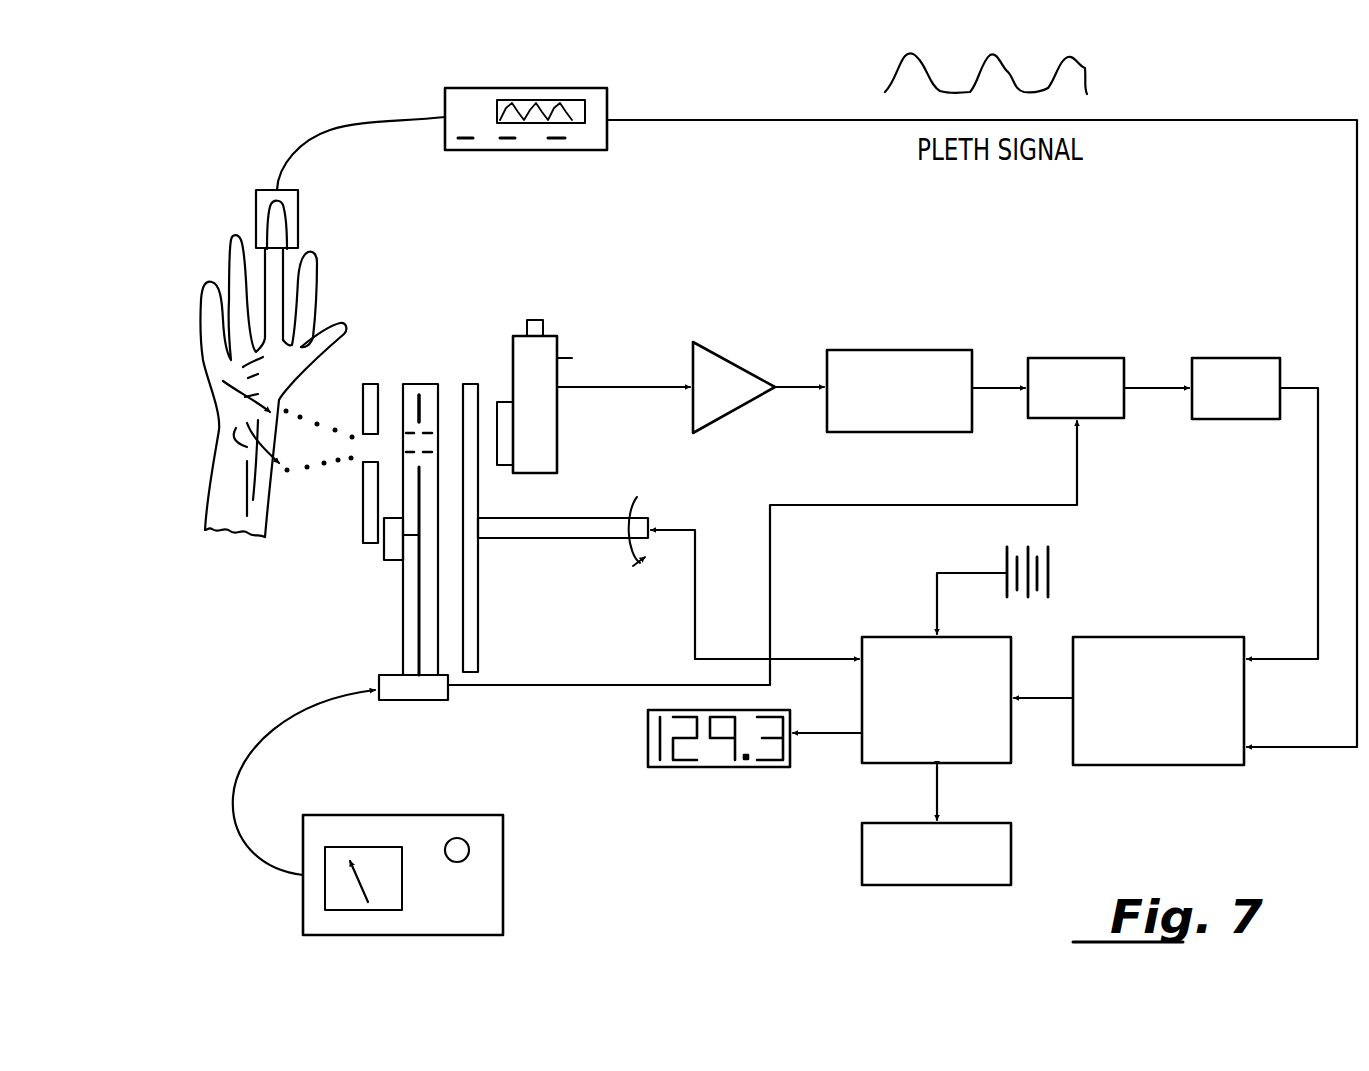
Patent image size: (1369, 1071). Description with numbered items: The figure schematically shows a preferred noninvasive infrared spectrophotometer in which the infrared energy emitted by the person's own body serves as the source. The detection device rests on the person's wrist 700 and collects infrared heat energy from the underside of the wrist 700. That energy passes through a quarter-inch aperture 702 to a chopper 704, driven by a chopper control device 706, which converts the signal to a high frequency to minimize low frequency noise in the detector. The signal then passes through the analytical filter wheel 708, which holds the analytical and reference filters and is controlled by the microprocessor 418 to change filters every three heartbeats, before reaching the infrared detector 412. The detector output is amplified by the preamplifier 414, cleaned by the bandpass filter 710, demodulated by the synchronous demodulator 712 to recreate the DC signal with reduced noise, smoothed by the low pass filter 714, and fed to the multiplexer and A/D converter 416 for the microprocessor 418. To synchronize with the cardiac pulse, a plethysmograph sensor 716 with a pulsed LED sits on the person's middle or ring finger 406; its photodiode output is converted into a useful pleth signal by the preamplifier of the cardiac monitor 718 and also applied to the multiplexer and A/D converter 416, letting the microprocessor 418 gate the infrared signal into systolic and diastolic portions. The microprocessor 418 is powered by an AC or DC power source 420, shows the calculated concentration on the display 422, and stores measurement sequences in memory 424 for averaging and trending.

The finger 406 is at (259, 245).
The plethysmograph sensor 716 is at (298, 208).
The cardiac monitor 718 is at (530, 143).
The wrist 700 is at (265, 463).
The ¼ inch aperture 702 is at (200, 573).
The chopper 704 is at (412, 700).
The chopper control device 706 is at (503, 880).
The analytical filter wheel 708 is at (478, 570).
The infrared detector 412 is at (555, 345).
The preamplifier 414 is at (727, 407).
The bandpass filter 710 is at (908, 432).
The synchronous demodulator 712 is at (1107, 328).
The low pass filter 714 is at (1233, 419).
The power source 420 is at (1055, 576).
The microprocessor 418 is at (1008, 748).
The multiplexer and A/D converter 416 is at (1197, 755).
The display 422 is at (713, 758).
The memory 424 is at (862, 842).